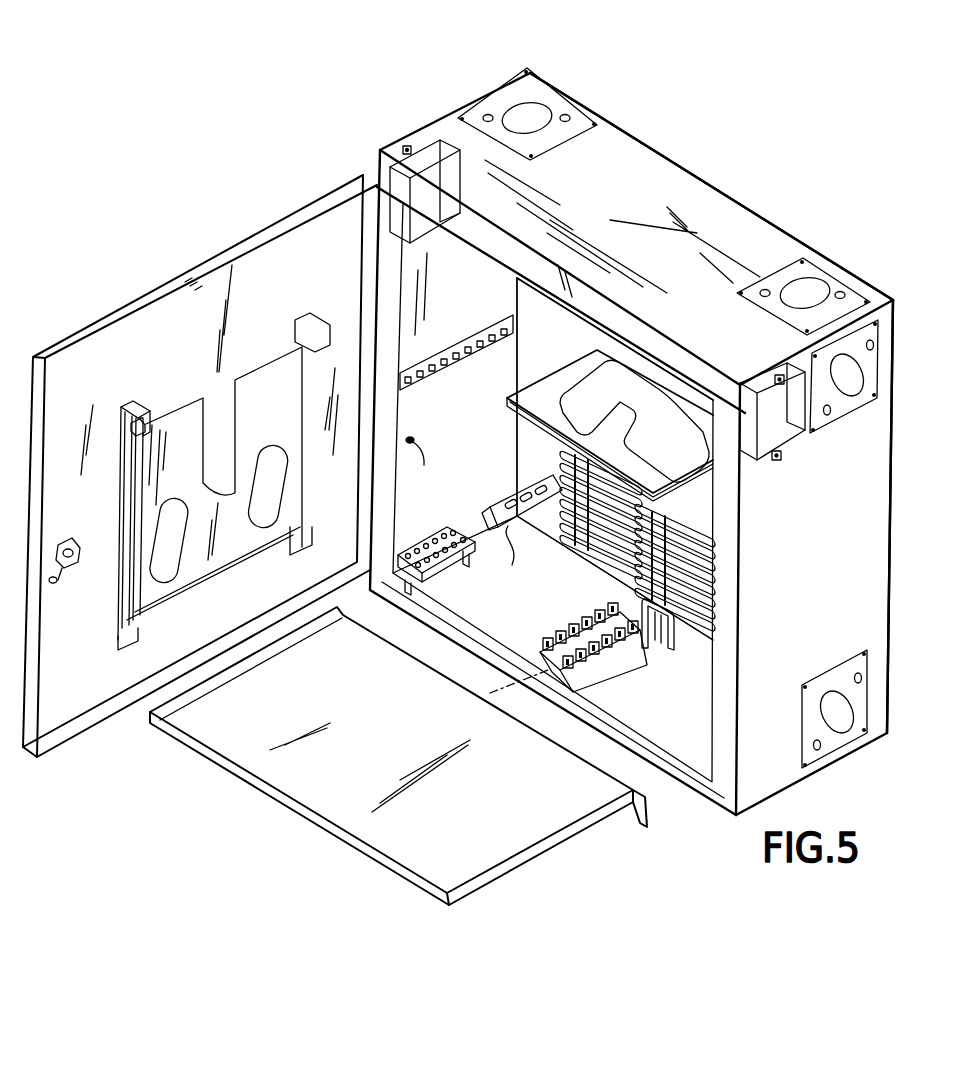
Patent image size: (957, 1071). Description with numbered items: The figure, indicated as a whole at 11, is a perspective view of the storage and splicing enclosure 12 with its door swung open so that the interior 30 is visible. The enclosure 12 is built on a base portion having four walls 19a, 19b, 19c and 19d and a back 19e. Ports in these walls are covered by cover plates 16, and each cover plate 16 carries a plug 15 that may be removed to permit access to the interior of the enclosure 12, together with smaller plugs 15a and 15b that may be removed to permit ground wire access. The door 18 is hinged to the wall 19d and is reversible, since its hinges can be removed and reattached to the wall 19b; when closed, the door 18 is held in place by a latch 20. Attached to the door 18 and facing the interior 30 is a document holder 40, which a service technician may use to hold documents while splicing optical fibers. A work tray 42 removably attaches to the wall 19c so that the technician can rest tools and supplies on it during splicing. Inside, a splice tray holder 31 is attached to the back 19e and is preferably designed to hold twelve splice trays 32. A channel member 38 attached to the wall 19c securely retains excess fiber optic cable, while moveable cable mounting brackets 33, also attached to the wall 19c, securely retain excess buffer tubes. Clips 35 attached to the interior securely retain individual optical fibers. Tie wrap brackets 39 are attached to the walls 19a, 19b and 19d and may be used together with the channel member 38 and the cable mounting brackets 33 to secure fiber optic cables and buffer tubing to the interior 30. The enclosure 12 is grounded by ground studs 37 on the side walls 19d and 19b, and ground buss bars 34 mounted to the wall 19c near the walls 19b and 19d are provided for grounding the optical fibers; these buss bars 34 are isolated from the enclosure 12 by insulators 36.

The enclosure assembly 11 is at (408, 86).
The storage and splicing enclosure 12 is at (703, 178).
The plug 15 is at (532, 107).
The plug 15a is at (570, 118).
The plug 15b is at (490, 114).
The cover plate 16 is at (557, 100).
The door 18 is at (97, 323).
The wall 19a is at (658, 226).
The wall 19b is at (823, 579).
The wall 19c is at (555, 630).
The wall 19d is at (497, 421).
The back 19e is at (590, 345).
The latch 20 is at (66, 572).
The interior 30 is at (672, 716).
The splice tray holder 31 is at (576, 537).
The splice tray 32 is at (548, 420).
The moveable cable mounting bracket 33 is at (580, 672).
The ground buss bar 34 is at (420, 540).
The clip 35 is at (512, 560).
The insulator 36 is at (467, 566).
The ground stud 37 is at (424, 466).
The channel member 38 is at (676, 642).
The tie wrap bracket 39 is at (448, 358).
The document holder 40 is at (113, 652).
The work tray 42 is at (330, 835).